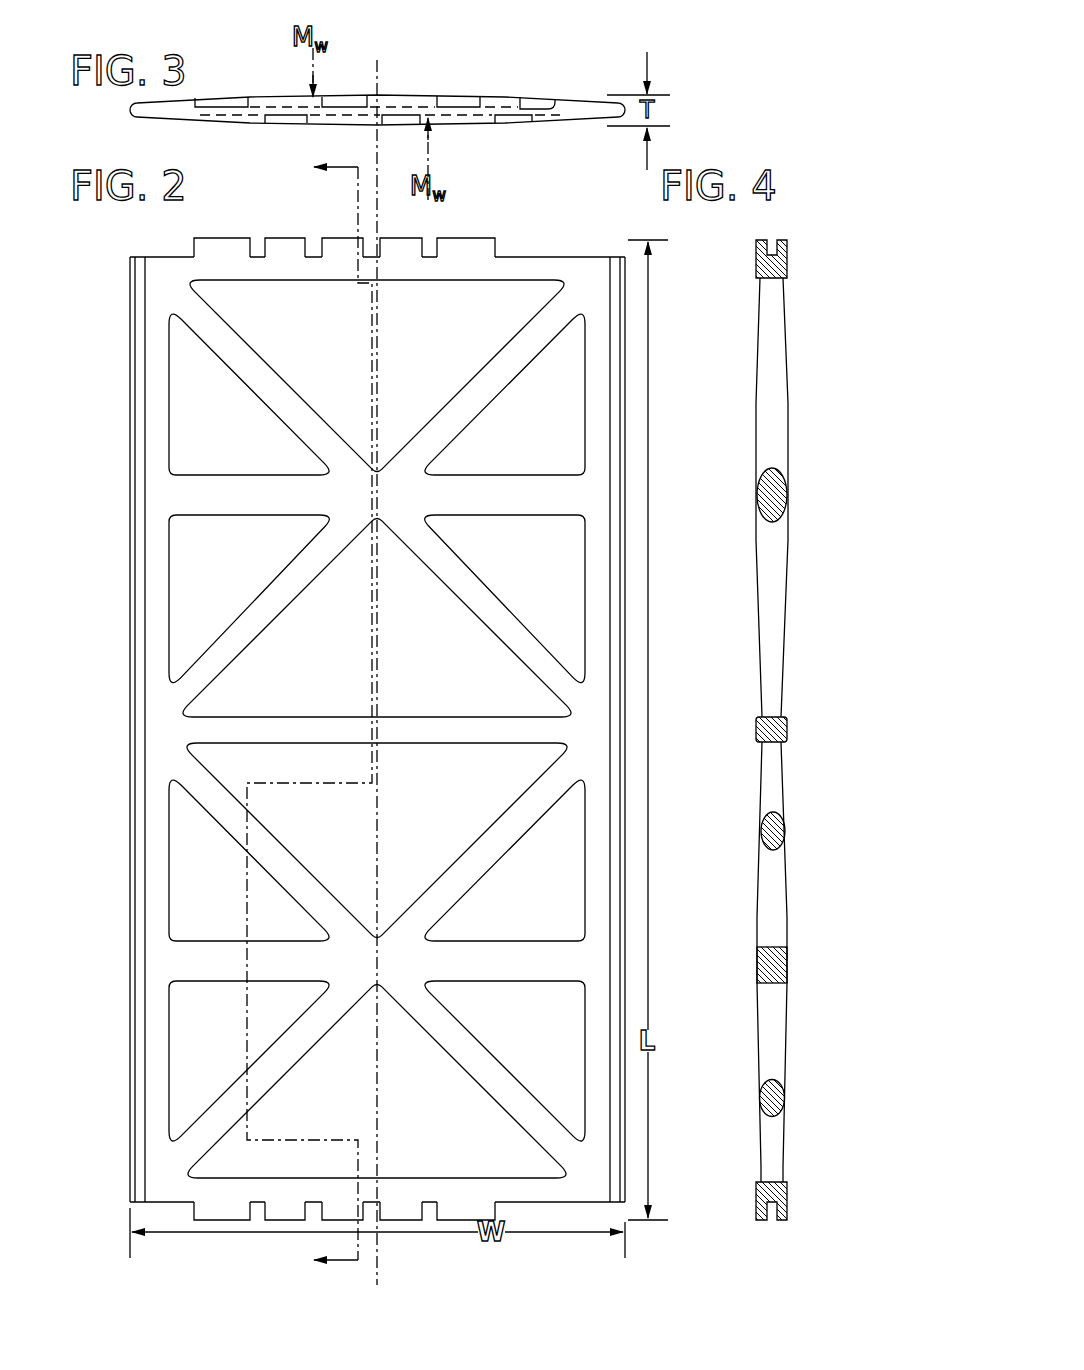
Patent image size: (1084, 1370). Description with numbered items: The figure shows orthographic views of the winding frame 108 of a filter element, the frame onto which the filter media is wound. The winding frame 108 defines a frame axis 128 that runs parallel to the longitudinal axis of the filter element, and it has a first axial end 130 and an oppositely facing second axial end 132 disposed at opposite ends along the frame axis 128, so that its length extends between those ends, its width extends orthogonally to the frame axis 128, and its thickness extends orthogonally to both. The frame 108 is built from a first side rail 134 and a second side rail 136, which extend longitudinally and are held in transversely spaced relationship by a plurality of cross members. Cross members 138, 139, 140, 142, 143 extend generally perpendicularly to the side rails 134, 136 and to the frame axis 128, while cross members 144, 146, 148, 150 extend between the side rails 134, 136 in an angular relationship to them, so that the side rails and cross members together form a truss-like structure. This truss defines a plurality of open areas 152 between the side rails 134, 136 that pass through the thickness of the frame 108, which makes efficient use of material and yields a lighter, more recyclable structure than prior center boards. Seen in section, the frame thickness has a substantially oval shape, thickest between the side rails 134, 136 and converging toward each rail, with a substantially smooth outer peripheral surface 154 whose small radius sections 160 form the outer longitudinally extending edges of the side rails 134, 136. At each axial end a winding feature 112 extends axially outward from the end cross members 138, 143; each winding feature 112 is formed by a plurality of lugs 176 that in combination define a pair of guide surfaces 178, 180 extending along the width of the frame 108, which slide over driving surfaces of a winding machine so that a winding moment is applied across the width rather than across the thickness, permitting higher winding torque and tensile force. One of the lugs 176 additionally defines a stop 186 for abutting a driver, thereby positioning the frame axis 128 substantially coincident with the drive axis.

In FIG. 3, the winding frame 108 is at (484, 62).
In FIG. 2, the winding frame 108 is at (93, 562).
In FIG. 4, the winding frame 108 is at (735, 520).
In FIG. 3, the winding feature 112 is at (127, 126).
In FIG. 2, the winding feature 112 is at (540, 216).
In FIG. 2, the frame axis 128 is at (380, 843).
In FIG. 2, the first axial end 130 is at (170, 1202).
In FIG. 2, the second axial end 132 is at (170, 257).
In FIG. 2, the first side rail 134 is at (146, 382).
In FIG. 2, the second side rail 136 is at (609, 382).
In FIG. 4, the second side rail 136 is at (768, 421).
In FIG. 2, the cross member 138 is at (426, 268).
In FIG. 2, the cross member 139 is at (487, 493).
In FIG. 2, the cross member 140 is at (426, 723).
In FIG. 2, the cross member 142 is at (487, 960).
In FIG. 2, the cross member 143 is at (426, 1188).
In FIG. 2, the cross member 144 is at (470, 392).
In FIG. 2, the cross member 146 is at (282, 392).
In FIG. 2, the cross member 148 is at (503, 826).
In FIG. 2, the cross member 150 is at (258, 842).
In FIG. 2, the open area 152 is at (377, 729).
In FIG. 3, the outer peripheral surface 154 is at (283, 96).
In FIG. 2, the small radius section 160 is at (130, 332).
In FIG. 3, the lug 176 is at (219, 97).
In FIG. 2, the lug 176 is at (220, 238).
In FIG. 4, the lug 176 is at (756, 243).
In FIG. 3, the guide surface 178 is at (390, 108).
In FIG. 4, the guide surface 178 is at (777, 242).
In FIG. 3, the guide surface 180 is at (228, 110).
In FIG. 4, the guide surface 180 is at (768, 242).
In FIG. 3, the stop 186 is at (524, 100).